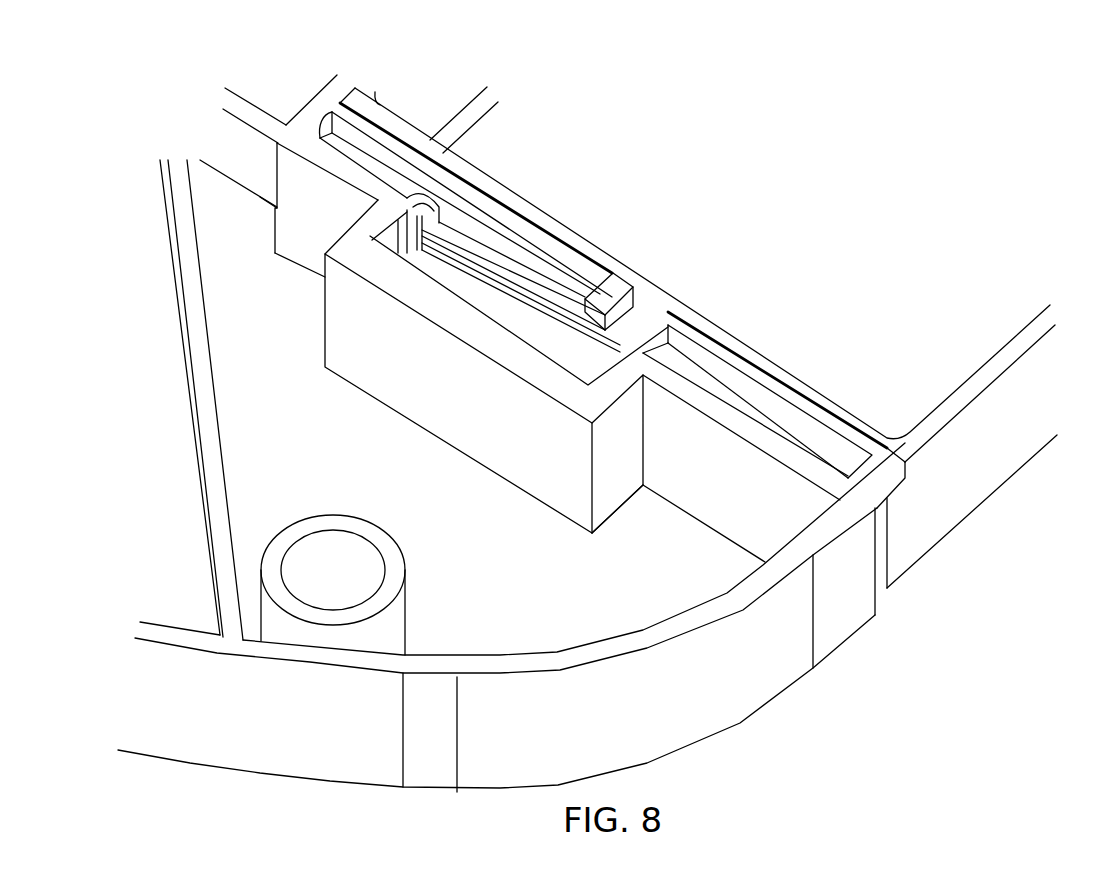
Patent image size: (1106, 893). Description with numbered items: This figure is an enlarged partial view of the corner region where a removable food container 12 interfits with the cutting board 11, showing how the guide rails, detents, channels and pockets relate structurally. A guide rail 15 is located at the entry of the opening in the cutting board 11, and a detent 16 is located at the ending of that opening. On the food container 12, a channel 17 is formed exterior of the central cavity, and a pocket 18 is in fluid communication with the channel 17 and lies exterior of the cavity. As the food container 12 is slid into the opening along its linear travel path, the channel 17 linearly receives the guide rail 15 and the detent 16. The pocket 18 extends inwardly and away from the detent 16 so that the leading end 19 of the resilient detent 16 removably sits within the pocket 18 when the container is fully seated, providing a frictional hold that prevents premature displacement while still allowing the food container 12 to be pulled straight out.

The cutting board 11 is at (843, 628).
The food container 12 is at (985, 477).
The guide rail 15 is at (878, 470).
The detent 16 is at (570, 290).
The channel 17 is at (633, 320).
The pocket 18 is at (625, 283).
The leading end 19 is at (613, 275).